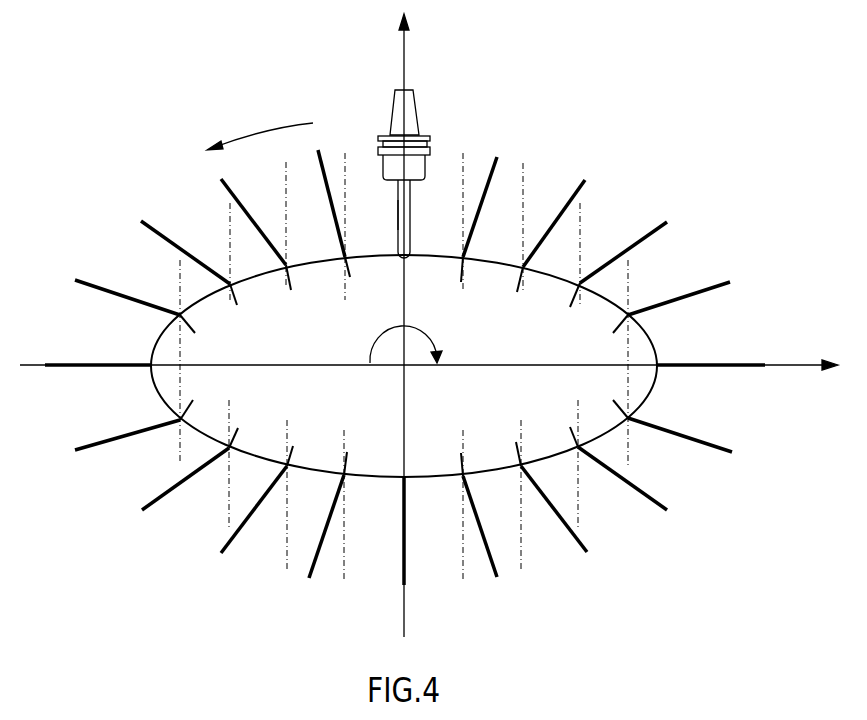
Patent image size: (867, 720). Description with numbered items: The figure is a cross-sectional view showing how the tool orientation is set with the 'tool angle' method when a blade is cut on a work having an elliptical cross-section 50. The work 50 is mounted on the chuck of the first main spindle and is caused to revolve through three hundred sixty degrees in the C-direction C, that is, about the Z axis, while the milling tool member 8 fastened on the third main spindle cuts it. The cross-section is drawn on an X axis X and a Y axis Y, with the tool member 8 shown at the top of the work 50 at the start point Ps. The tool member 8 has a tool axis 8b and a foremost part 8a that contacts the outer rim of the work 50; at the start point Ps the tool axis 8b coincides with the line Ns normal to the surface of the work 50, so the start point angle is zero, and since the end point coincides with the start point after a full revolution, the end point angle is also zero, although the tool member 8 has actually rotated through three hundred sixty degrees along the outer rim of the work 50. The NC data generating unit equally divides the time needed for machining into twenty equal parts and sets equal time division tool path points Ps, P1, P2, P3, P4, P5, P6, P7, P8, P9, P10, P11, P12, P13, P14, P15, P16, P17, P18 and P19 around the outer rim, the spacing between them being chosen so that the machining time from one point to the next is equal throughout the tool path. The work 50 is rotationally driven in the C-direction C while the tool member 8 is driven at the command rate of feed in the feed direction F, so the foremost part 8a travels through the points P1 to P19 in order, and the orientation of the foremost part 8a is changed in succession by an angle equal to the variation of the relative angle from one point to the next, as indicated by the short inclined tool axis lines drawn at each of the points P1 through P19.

The tool member 8 is at (410, 105).
The foremost part of the tool member 8a is at (398, 258).
The tool axis 8b is at (405, 210).
The work having an elliptical cross-section 50 is at (177, 388).
The line normal to the surface of the work at the start point Ns is at (405, 60).
The start point Ps is at (407, 256).
The X axis X is at (414, 325).
The Y axis Y is at (429, 351).
The C-direction C is at (415, 345).
The feed direction F is at (260, 125).
The equal time division tool path point P1 is at (347, 257).
The equal time division tool path point P2 is at (288, 263).
The equal time division tool path point P3 is at (231, 283).
The equal time division tool path point P4 is at (178, 315).
The equal time division tool path point P5 is at (151, 364).
The equal time division tool path point P6 is at (178, 422).
The equal time division tool path point P7 is at (230, 450).
The equal time division tool path point P8 is at (289, 468).
The equal time division tool path point P9 is at (346, 478).
The equal time division tool path point P10 is at (402, 480).
The equal time division tool path point P11 is at (461, 478).
The equal time division tool path point P12 is at (519, 468).
The equal time division tool path point P13 is at (577, 449).
The equal time division tool path point P14 is at (630, 417).
The equal time division tool path point P15 is at (658, 364).
The equal time division tool path point P16 is at (630, 315).
The equal time division tool path point P17 is at (582, 282).
The equal time division tool path point P18 is at (523, 266).
The equal time division tool path point P19 is at (462, 256).